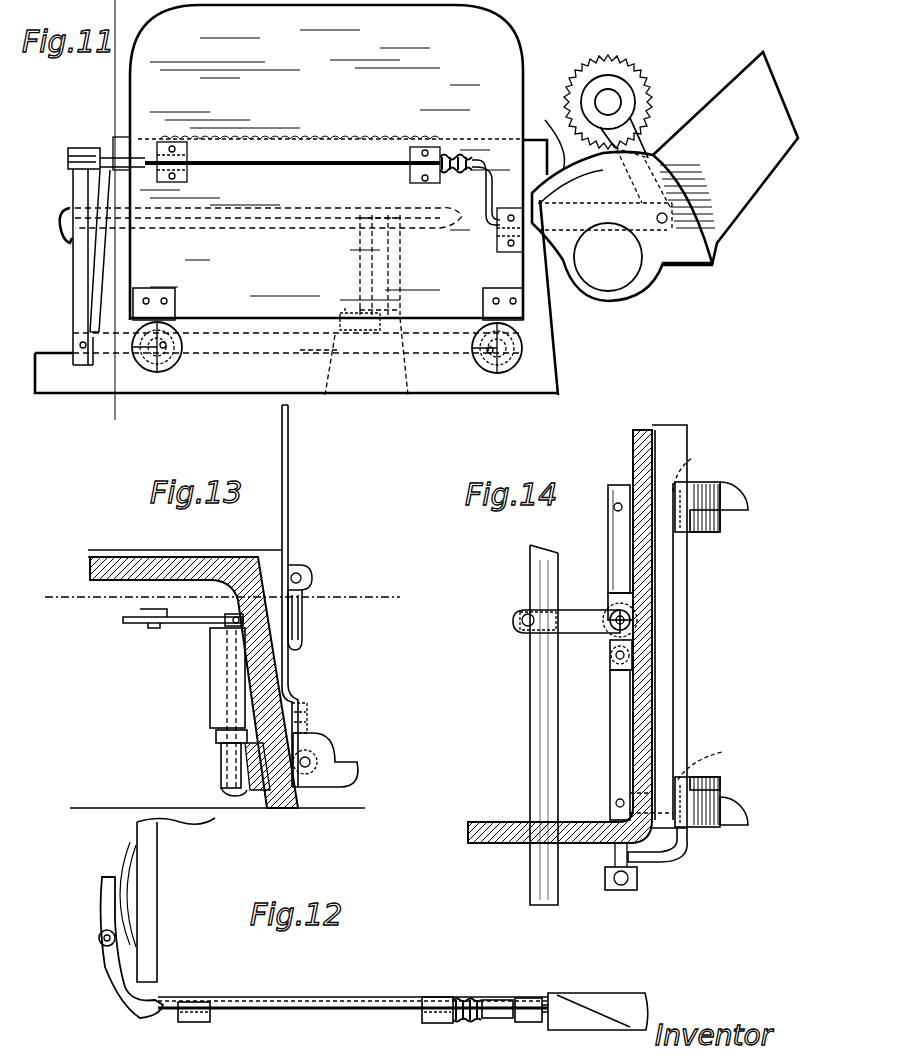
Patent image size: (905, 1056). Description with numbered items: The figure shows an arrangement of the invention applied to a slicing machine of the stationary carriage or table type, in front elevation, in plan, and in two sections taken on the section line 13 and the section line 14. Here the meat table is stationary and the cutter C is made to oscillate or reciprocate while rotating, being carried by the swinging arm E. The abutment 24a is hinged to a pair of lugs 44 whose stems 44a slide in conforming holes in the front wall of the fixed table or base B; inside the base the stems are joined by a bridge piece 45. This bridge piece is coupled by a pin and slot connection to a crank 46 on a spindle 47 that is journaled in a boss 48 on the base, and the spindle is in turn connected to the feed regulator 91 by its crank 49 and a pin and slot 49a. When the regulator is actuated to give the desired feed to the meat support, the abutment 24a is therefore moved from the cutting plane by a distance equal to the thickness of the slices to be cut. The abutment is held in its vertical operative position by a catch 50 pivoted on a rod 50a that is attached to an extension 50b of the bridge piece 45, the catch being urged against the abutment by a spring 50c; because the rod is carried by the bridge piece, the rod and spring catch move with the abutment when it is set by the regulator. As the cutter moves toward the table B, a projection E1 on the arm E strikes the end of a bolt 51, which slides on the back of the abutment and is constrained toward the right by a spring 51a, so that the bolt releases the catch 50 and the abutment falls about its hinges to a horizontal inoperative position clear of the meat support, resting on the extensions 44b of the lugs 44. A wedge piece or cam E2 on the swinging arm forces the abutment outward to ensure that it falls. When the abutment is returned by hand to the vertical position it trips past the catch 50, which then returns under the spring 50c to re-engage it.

In FIG. 11, the section line 13- 13 is at (122, 420).
In FIG. 13, the section line 14- 14 is at (397, 600).
In FIG. 11, the abutment 24a is at (318, 162).
In FIG. 13, the abutment 24a is at (290, 480).
In FIG. 14, the abutment 24a is at (688, 640).
In FIG. 12, the abutment 24a is at (285, 1010).
In FIG. 11, the lugs 44 is at (180, 348).
In FIG. 13, the lugs 44 is at (325, 748).
In FIG. 14, the lugs 44 is at (738, 490).
In FIG. 13, the stems 44a is at (228, 784).
In FIG. 14, the stems 44a is at (694, 460).
In FIG. 11, the extensions of the lugs 44b is at (160, 372).
In FIG. 13, the extensions of the lugs 44b is at (357, 776).
In FIG. 14, the extensions of the lugs 44b is at (748, 510).
In FIG. 11, the bridge piece 45 is at (320, 383).
In FIG. 13, the bridge piece 45 is at (245, 766).
In FIG. 14, the bridge piece 45 is at (615, 765).
In FIG. 13, the crank 46 is at (216, 740).
In FIG. 14, the crank 46 is at (612, 652).
In FIG. 11, the spindle 47 is at (406, 374).
In FIG. 13, the spindle 47 is at (234, 700).
In FIG. 14, the spindle 47 is at (615, 600).
In FIG. 11, the boss 48 is at (355, 240).
In FIG. 13, the boss 48 is at (215, 668).
In FIG. 14, the boss 48 is at (615, 590).
In FIG. 13, the crank 49 is at (222, 622).
In FIG. 14, the crank 49 is at (590, 610).
In FIG. 14, the pin and slot 49a is at (530, 622).
In FIG. 11, the catch 50 is at (107, 160).
In FIG. 12, the catch 50 is at (122, 1003).
In FIG. 11, the rod 50a is at (80, 340).
In FIG. 14, the rod 50a is at (637, 885).
In FIG. 12, the rod 50a is at (102, 932).
In FIG. 11, the extension 50b is at (110, 400).
In FIG. 14, the extension 50b is at (628, 860).
In FIG. 12, the spring 50c is at (130, 850).
In FIG. 11, the bolt 51 is at (318, 165).
In FIG. 13, the bolt 51 is at (302, 602).
In FIG. 12, the bolt 51 is at (372, 1010).
In FIG. 11, the spring 51a is at (428, 165).
In FIG. 12, the spring 51a is at (460, 1030).
In FIG. 11, the feed regulator 91 is at (62, 232).
In FIG. 13, the feed regulator 91 is at (140, 615).
In FIG. 14, the feed regulator 91 is at (536, 870).
In FIG. 11, the fixed table or base B is at (296, 267).
In FIG. 13, the fixed table or base B is at (203, 572).
In FIG. 14, the fixed table or base B is at (645, 700).
In FIG. 12, the fixed table or base B is at (342, 907).
In FIG. 11, the cutter C is at (645, 82).
In FIG. 11, the swinging arm E is at (725, 158).
In FIG. 11, the projection E1 is at (578, 260).
In FIG. 12, the projection E1 is at (570, 1030).
In FIG. 11, the wedge piece or cam E2 is at (546, 134).
In FIG. 12, the wedge piece or cam E2 is at (633, 996).